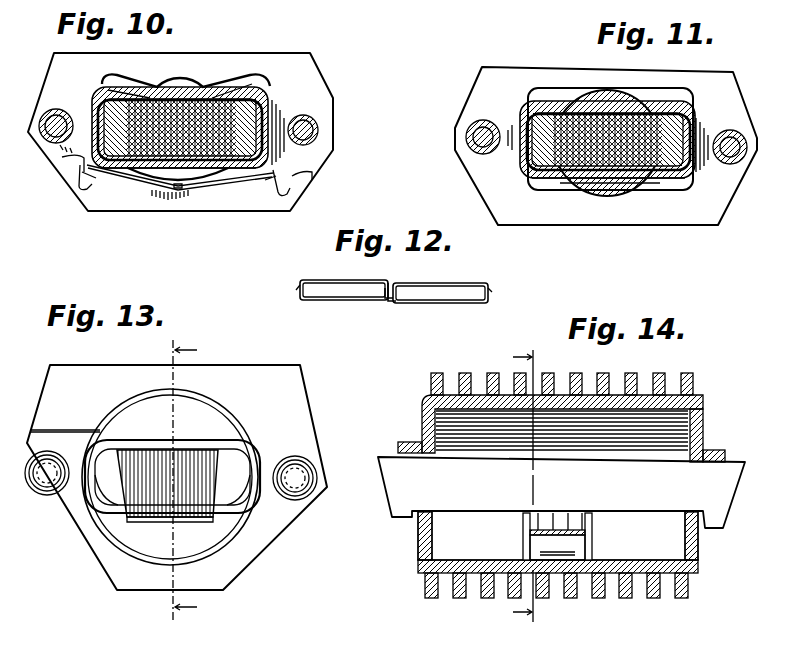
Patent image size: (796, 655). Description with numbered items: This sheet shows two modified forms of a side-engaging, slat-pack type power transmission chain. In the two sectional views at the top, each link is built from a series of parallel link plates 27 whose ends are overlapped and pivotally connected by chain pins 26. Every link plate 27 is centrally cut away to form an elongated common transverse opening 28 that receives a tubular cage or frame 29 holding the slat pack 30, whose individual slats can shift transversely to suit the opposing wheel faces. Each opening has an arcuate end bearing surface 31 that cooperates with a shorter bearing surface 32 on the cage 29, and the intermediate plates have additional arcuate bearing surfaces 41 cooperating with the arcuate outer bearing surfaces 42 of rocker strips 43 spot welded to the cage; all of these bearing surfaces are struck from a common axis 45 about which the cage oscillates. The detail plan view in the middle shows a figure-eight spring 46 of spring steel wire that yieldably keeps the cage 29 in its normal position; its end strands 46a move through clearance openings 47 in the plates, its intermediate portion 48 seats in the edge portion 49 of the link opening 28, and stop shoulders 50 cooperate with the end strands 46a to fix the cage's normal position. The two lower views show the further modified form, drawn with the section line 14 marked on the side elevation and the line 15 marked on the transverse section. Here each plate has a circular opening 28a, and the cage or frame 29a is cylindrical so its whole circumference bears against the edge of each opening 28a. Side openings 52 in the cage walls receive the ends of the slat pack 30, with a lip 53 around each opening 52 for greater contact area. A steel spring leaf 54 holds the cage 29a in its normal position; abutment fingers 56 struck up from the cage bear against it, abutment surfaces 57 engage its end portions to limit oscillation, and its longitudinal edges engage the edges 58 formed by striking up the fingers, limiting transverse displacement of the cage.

In FIG. 10, the chain pins 26 is at (44, 116).
In FIG. 11, the chain pins 26 is at (470, 130).
In FIG. 13, the chain pins 26 is at (297, 477).
In FIG. 10, the link plates 27 is at (275, 212).
In FIG. 11, the link plates 27 is at (692, 227).
In FIG. 13, the link plates 27 is at (268, 553).
In FIG. 14, the link plates 27 is at (425, 583).
In FIG. 10, the common transverse opening 28 is at (240, 88).
In FIG. 11, the common transverse opening 28 is at (666, 98).
In FIG. 13, the circular opening 28a is at (230, 408).
In FIG. 14, the circular opening 28a is at (428, 382).
In FIG. 10, the cage or frame 29 is at (128, 100).
In FIG. 11, the cage or frame 29 is at (548, 100).
In FIG. 13, the cylindrical cage or frame 29a is at (172, 430).
In FIG. 14, the cylindrical cage or frame 29a is at (420, 419).
In FIG. 10, the slat pack 30 is at (128, 170).
In FIG. 11, the slat pack 30 is at (560, 180).
In FIG. 13, the slat pack 30 is at (180, 508).
In FIG. 14, the slat pack 30 is at (390, 496).
In FIG. 10, the arcuate end bearing surface 31 is at (102, 82).
In FIG. 11, the arcuate end bearing surface 31 is at (540, 90).
In FIG. 10, the bearing surface 32 is at (94, 110).
In FIG. 11, the bearing surface 32 is at (520, 162).
In FIG. 10, the additional arcuate bearing surfaces 41 is at (184, 79).
In FIG. 11, the additional arcuate bearing surfaces 41 is at (606, 89).
In FIG. 10, the arcuate outer bearing surfaces 42 is at (205, 88).
In FIG. 11, the arcuate outer bearing surfaces 42 is at (588, 92).
In FIG. 10, the rocker strips 43 is at (165, 80).
In FIG. 11, the rocker strips 43 is at (628, 96).
In FIG. 10, the common axis 45 is at (156, 176).
In FIG. 11, the common axis 45 is at (576, 182).
In FIG. 10, the spring 46 is at (232, 183).
In FIG. 12, the spring 46 is at (342, 302).
In FIG. 10, the end strands 46a is at (85, 176).
In FIG. 12, the end strands 46a is at (300, 289).
In FIG. 10, the clearance openings 47 is at (105, 187).
In FIG. 10, the intermediate portion 48 is at (178, 190).
In FIG. 12, the intermediate portion 48 is at (390, 300).
In FIG. 10, the edge portion 49 is at (186, 200).
In FIG. 10, the stop shoulders 50 is at (62, 160).
In FIG. 13, the side openings 52 is at (110, 508).
In FIG. 14, the side openings 52 is at (424, 523).
In FIG. 13, the lip 53 is at (32, 430).
In FIG. 14, the lip 53 is at (398, 443).
In FIG. 14, the steel spring leaf 54 is at (530, 532).
In FIG. 14, the abutment fingers 56 is at (568, 553).
In FIG. 14, the abutment surfaces 57 is at (560, 510).
In FIG. 14, the edges 58 is at (523, 546).
In FIG. 13, the section line 14- 14 is at (167, 479).
In FIG. 14, the section line 15- 15 is at (513, 486).